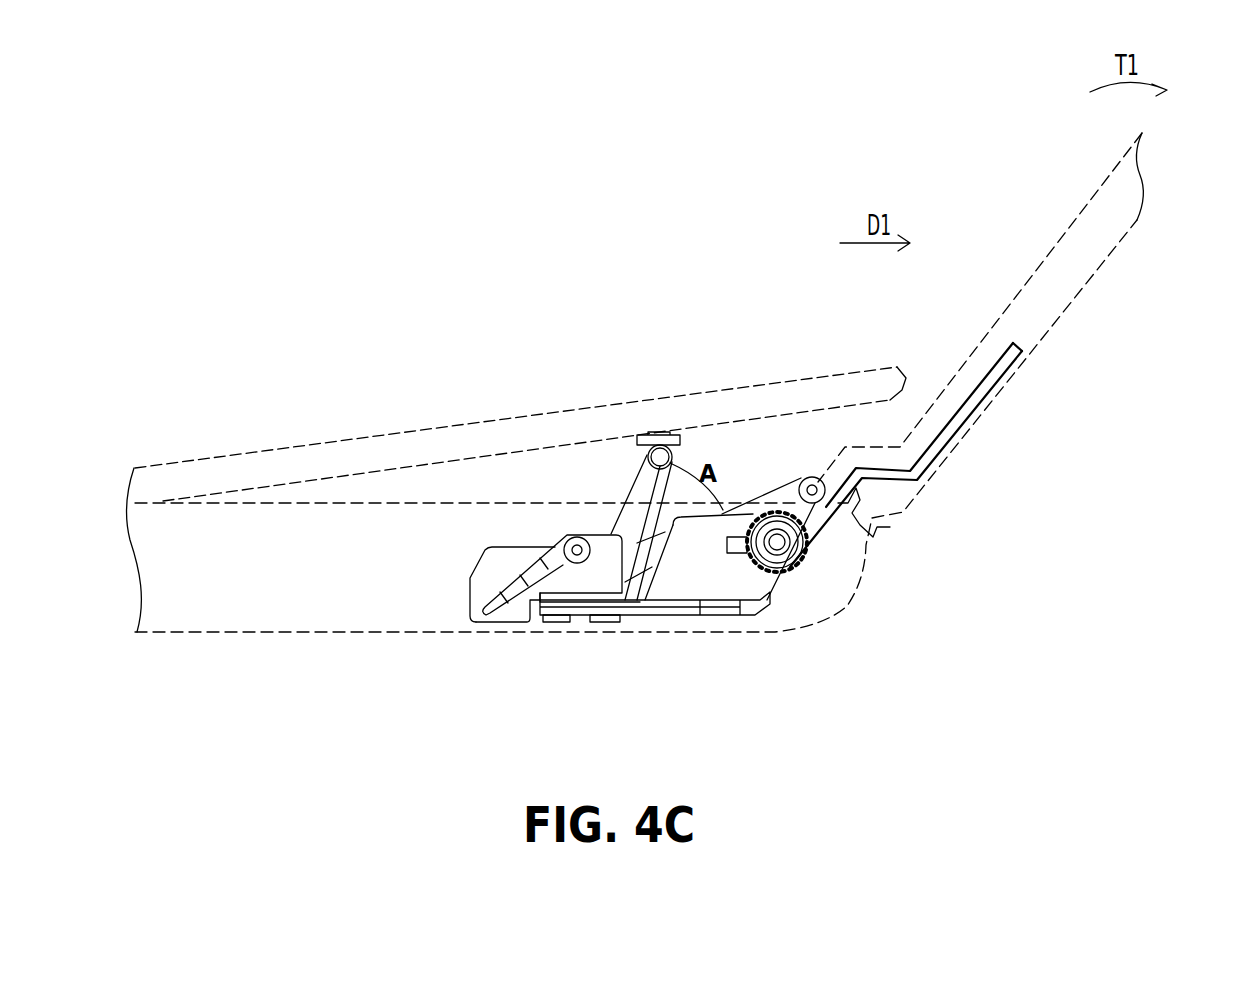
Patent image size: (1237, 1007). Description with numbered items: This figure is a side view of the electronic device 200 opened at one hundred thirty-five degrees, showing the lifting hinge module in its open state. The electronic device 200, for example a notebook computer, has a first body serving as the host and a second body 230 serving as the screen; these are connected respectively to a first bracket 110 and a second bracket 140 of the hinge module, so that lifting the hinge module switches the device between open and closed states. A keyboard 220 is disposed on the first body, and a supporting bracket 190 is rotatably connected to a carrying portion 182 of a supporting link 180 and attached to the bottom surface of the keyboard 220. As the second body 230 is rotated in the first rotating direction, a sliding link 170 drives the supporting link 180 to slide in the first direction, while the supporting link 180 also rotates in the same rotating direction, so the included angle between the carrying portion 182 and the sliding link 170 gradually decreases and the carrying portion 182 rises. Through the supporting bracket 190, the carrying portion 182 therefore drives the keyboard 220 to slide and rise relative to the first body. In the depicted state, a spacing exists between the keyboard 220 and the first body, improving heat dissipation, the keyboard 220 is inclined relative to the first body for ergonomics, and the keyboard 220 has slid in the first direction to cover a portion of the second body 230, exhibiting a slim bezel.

The first bracket 110 is at (290, 607).
The second bracket 140 is at (947, 428).
The sliding link 170 is at (787, 497).
The supporting link 180 is at (571, 582).
The carrying portion 182 is at (632, 527).
The supporting bracket 190 is at (657, 432).
The electronic device 200 is at (1211, 714).
The keyboard 220 is at (331, 462).
The second body 230 is at (1077, 274).